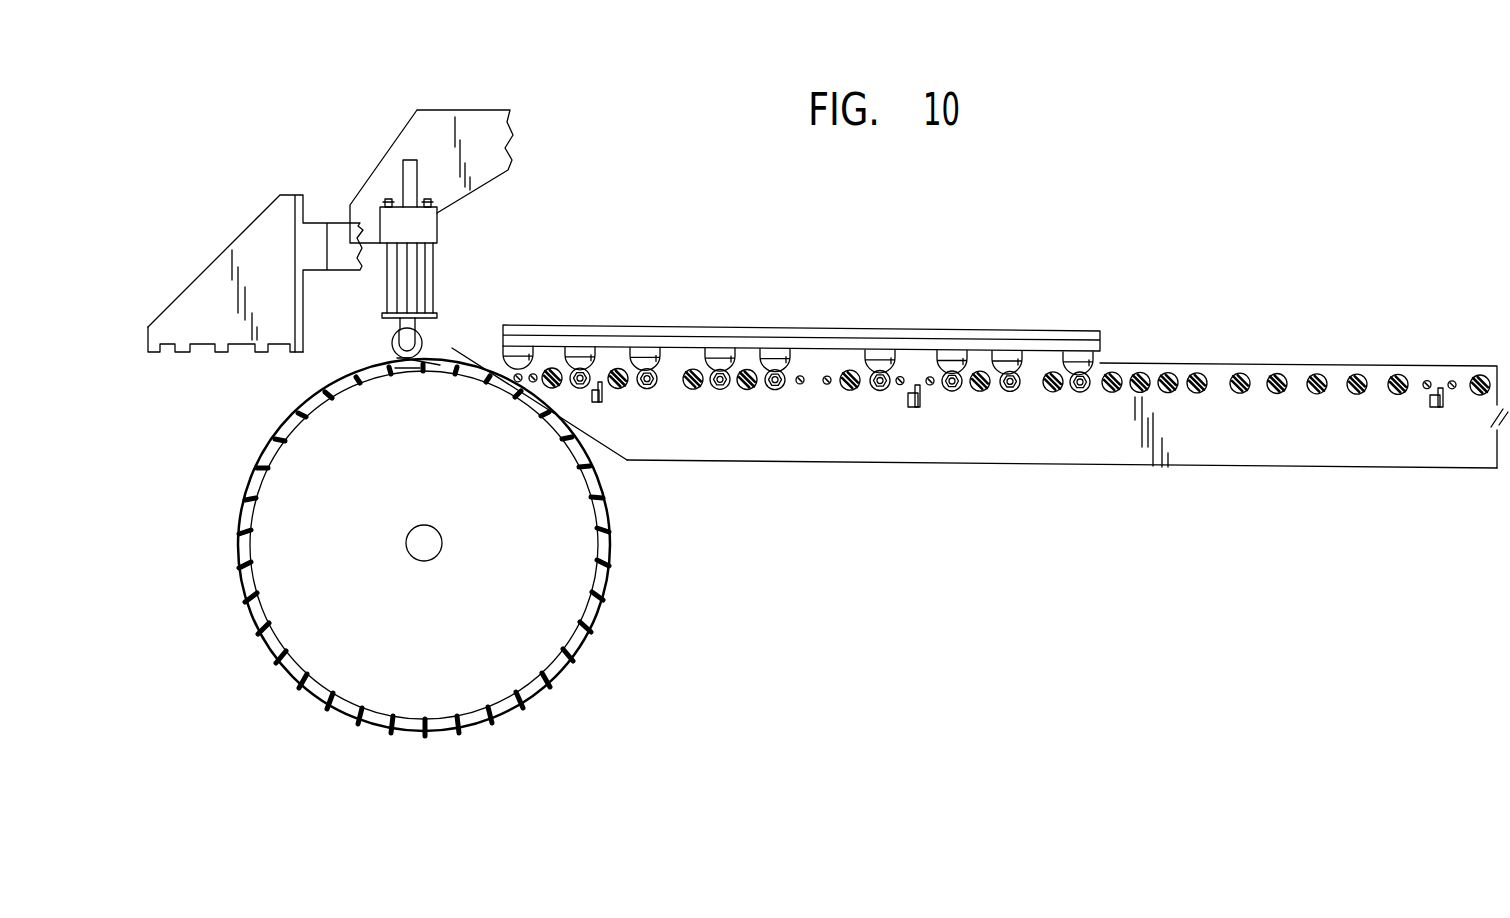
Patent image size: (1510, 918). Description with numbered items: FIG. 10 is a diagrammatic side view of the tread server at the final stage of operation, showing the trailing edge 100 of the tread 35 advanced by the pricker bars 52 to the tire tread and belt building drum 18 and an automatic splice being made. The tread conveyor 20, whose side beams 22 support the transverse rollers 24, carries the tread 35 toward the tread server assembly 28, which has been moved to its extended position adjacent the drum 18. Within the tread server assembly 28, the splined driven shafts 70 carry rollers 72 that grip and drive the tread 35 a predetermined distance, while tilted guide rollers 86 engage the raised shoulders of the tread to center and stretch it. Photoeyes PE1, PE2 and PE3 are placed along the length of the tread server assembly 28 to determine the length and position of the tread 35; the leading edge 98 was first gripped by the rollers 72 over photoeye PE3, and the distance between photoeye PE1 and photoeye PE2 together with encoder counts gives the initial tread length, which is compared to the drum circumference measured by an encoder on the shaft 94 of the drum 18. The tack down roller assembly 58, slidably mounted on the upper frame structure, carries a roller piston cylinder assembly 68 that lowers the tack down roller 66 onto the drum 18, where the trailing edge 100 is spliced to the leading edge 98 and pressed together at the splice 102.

The tire tread and belt building drum 18 is at (572, 593).
The tread conveyor 20 is at (1330, 475).
The side beams 22 is at (1245, 447).
The transverse rollers 24 is at (1317, 375).
The tread server assembly 28 is at (806, 296).
The tread 35 is at (250, 457).
The pricker bars 52 is at (210, 277).
The tack down roller assembly 58 is at (440, 105).
The tack down roller 66 is at (420, 337).
The roller piston cylinder assembly 68 is at (432, 227).
The splined driven shafts 70 is at (880, 390).
The rollers 72 is at (773, 390).
The tilted guide rollers 86 is at (580, 348).
The shaft 94 is at (420, 553).
The leading edge 98 is at (410, 363).
The trailing edge 100 is at (397, 356).
The splice 102 is at (405, 363).
The photoeye PE1 is at (604, 397).
The photoeye PE2 is at (1443, 405).
The photoeye PE3 is at (923, 397).